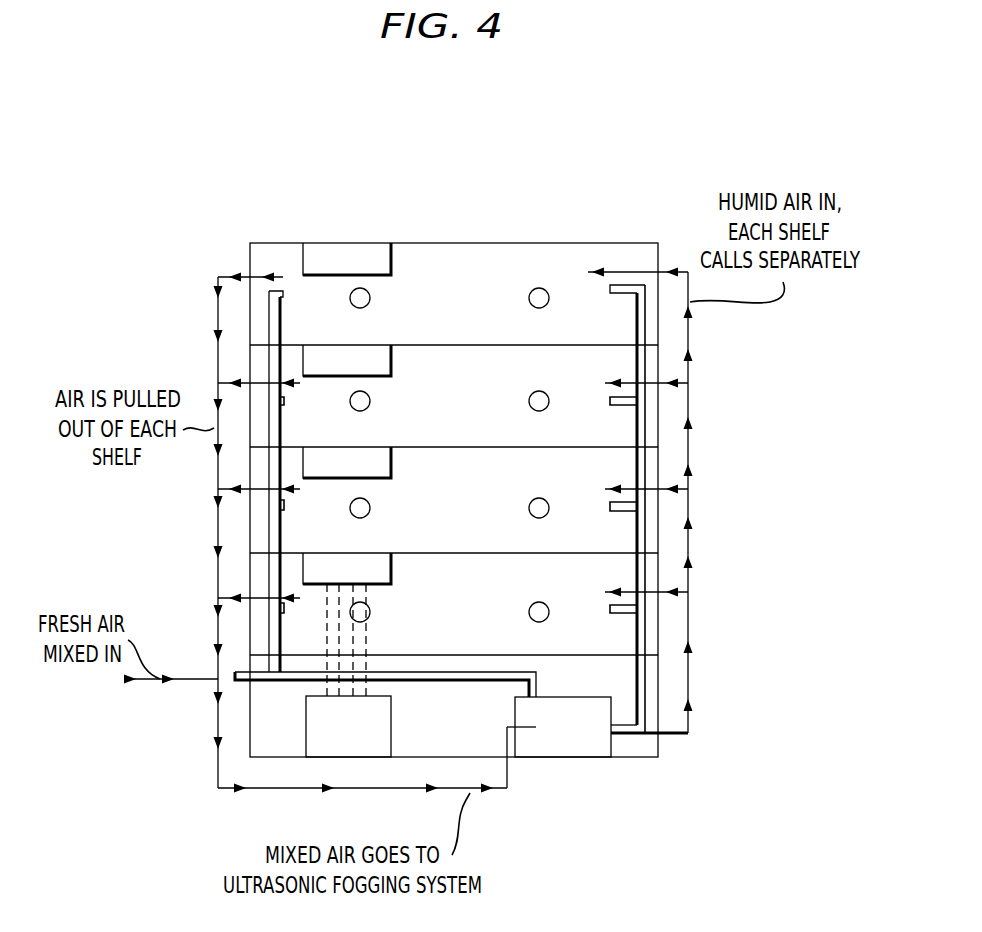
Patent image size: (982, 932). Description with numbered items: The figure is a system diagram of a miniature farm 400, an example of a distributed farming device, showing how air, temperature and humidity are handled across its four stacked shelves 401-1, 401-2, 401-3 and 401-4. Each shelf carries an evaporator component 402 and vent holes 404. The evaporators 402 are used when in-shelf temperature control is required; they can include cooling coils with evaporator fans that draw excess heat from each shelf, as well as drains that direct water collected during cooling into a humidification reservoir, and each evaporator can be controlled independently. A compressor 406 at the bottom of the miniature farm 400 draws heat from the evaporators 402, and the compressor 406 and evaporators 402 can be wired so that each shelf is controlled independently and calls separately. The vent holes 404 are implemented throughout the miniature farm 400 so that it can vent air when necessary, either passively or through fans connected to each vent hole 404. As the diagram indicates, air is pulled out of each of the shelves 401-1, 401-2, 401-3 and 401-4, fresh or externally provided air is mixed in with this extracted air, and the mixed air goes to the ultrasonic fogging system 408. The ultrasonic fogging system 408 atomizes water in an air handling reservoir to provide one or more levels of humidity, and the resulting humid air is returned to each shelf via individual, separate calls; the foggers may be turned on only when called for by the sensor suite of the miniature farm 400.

The miniature farm 400 is at (166, 188).
The shelf 401-1 is at (266, 257).
The shelf 401-2 is at (259, 361).
The shelf 401-3 is at (258, 516).
The shelf 401-4 is at (258, 578).
The evaporators 402 is at (349, 257).
The vent holes 404 is at (539, 294).
The compressor 406 is at (330, 729).
The ultrasonic fogging system 408 is at (587, 745).